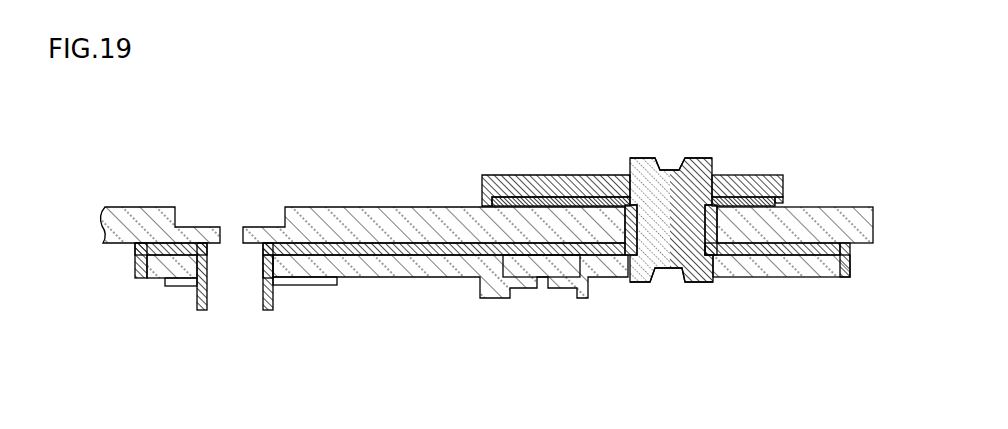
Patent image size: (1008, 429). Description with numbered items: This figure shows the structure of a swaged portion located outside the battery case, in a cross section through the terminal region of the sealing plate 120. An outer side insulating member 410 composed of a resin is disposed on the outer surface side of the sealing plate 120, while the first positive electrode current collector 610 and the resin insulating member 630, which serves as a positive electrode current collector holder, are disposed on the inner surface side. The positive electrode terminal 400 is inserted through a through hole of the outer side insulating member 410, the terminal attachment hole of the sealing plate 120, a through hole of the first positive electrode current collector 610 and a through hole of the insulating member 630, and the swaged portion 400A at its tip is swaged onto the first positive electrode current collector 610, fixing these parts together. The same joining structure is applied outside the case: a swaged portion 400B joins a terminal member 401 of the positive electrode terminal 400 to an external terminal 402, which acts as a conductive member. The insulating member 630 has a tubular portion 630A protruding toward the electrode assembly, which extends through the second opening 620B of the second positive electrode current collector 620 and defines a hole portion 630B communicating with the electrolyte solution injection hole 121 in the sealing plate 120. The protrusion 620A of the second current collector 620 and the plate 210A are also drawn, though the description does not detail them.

The sealing plate 120 is at (845, 222).
The electrolyte solution injection hole 121 is at (225, 227).
The flexible substrate 210A is at (295, 283).
The positive electrode terminal 400 is at (686, 166).
The terminal member 401 is at (670, 172).
The external terminal 402 is at (722, 172).
The swaged portion 400A is at (645, 283).
The swaged portion 400B is at (630, 162).
The outer side insulating member 410 is at (783, 200).
The first positive electrode current collector 610 is at (792, 268).
The second positive electrode current collector 620 is at (415, 278).
The plate protrusion 620A is at (538, 288).
The second opening 620B is at (265, 265).
The insulating member 630 is at (398, 246).
The tubular portion 630A is at (198, 308).
The hole portion 630B is at (262, 282).